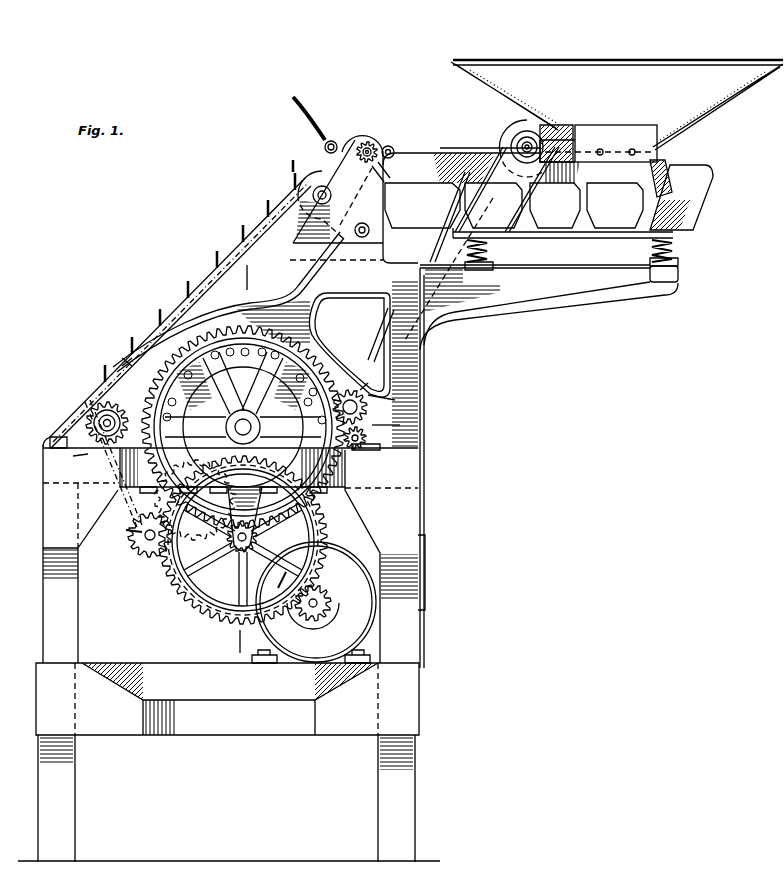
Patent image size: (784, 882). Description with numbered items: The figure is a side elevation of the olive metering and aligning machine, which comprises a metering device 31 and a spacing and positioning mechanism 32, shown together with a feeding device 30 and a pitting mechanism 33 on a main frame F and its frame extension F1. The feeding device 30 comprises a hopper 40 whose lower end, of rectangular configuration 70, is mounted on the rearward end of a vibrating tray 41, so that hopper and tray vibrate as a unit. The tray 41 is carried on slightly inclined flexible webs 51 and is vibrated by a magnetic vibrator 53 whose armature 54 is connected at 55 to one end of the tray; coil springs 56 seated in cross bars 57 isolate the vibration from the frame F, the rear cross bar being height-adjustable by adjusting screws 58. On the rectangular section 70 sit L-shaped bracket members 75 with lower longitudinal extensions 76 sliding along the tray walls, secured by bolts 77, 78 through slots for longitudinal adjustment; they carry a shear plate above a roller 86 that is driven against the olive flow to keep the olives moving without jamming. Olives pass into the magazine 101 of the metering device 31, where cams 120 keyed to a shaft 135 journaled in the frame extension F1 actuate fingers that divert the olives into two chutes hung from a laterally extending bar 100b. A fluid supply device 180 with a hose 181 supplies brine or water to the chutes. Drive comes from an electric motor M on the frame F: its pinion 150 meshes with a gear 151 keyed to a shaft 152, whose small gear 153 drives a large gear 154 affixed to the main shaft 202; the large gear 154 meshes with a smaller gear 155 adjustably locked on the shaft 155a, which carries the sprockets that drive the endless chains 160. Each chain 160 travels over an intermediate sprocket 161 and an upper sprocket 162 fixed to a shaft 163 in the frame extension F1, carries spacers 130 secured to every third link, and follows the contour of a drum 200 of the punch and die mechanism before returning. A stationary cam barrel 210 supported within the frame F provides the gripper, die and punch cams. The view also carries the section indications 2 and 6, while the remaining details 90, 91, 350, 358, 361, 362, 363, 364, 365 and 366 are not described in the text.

The section line 6 is at (612, 5).
The hopper 40 is at (684, 68).
The rectangular configuration of hopper lower end 70 is at (602, 140).
The bracket members 75 is at (560, 138).
The bolt 78 is at (580, 140).
The roller 86 is at (531, 128).
The guide arc 90 is at (525, 133).
The bolt 77 is at (510, 148).
The lower longitudinal extensions 76 is at (497, 152).
The feeding device 30 is at (455, 147).
The vibrating tray 41 is at (434, 172).
The webs 51 is at (590, 205).
The magazine 101 is at (385, 208).
The shaker lever 91 is at (436, 242).
The laterally extending bar 100b is at (370, 234).
The magnetic vibrator 53 is at (695, 165).
The armature 54 is at (670, 190).
The armature connection 55 is at (580, 232).
The coil springs 56 is at (675, 250).
The cross bars 57 is at (494, 270).
The adjusting screws 58 is at (678, 272).
The main frame F is at (565, 306).
The frame extension F1 is at (262, 270).
The metering device 31 is at (378, 134).
The cams 120 is at (394, 150).
The shaft 135 is at (367, 147).
The shaft 163 is at (322, 186).
The upper sprocket 162 is at (277, 176).
The fluid supply device 180 is at (333, 140).
The hose 181 is at (327, 125).
The spacing and positioning mechanism 32 is at (235, 228).
The spacer 130 is at (192, 298).
The endless chain 160 is at (212, 270).
The intermediate sprocket 161 is at (118, 402).
The large gear 154 is at (127, 362).
The pitting mechanism 33 is at (163, 352).
The section line 2 is at (258, 277).
The drum 200 is at (293, 370).
The lever link 358 is at (376, 352).
The pinion 361 is at (372, 409).
The pinion arm 362 is at (398, 400).
The shaft 363 is at (390, 425).
The small pinion 364 is at (372, 437).
The bearing block 365 is at (372, 448).
The pawl 366 is at (380, 408).
The side bracket 350 is at (428, 558).
The cam barrel 210 is at (195, 496).
The main shaft 202 is at (243, 535).
The gear 151 is at (178, 598).
The shaft 152 is at (228, 548).
The small gear 153 is at (272, 584).
The pinion 150 is at (320, 594).
The electric motor M is at (316, 602).
The smaller gear 155 is at (146, 550).
The shaft 155a is at (140, 533).